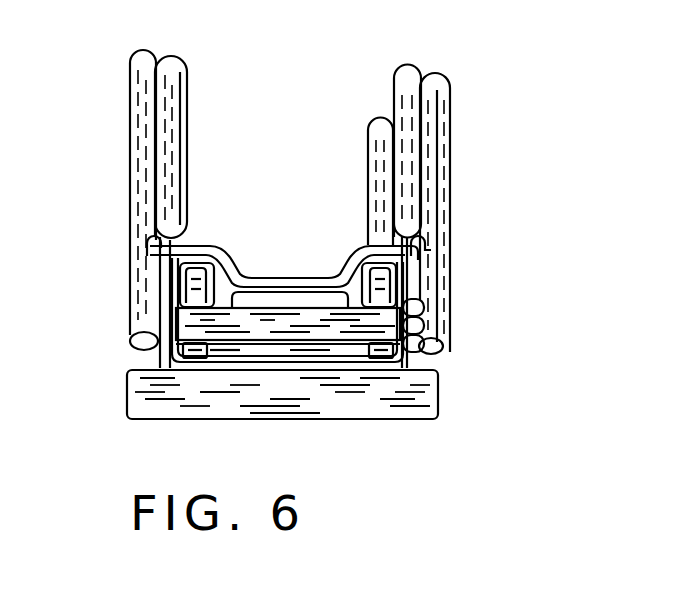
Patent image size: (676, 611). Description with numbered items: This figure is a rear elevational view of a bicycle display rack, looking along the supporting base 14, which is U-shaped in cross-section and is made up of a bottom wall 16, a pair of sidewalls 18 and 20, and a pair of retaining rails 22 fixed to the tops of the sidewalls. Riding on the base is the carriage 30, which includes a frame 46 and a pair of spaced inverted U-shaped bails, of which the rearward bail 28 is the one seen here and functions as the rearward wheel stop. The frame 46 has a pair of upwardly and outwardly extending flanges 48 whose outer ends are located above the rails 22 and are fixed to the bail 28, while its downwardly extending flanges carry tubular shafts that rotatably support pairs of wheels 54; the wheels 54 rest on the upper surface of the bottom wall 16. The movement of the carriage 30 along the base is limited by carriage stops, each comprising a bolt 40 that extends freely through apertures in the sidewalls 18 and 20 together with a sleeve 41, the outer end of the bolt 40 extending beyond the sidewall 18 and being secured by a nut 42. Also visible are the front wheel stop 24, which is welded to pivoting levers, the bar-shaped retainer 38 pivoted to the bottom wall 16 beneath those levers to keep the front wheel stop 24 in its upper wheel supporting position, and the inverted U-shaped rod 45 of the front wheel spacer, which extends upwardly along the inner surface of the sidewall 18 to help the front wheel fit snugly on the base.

The supporting base 14 is at (122, 363).
The bottom wall 16 is at (338, 368).
The sidewall 18 is at (402, 285).
The sidewall 20 is at (172, 333).
The retaining rails 22 is at (165, 255).
The front wheel stop 24 is at (437, 148).
The bail 28 is at (176, 72).
The carriage 30 is at (242, 210).
The retainer 38 is at (432, 384).
The bolt 40 is at (163, 317).
The sleeve 41 is at (257, 335).
The nut 42 is at (412, 322).
The inverted U-shaped rod 45 is at (375, 135).
The frame 46 is at (298, 250).
The flanges 48 is at (160, 244).
The wheels 54 is at (192, 337).